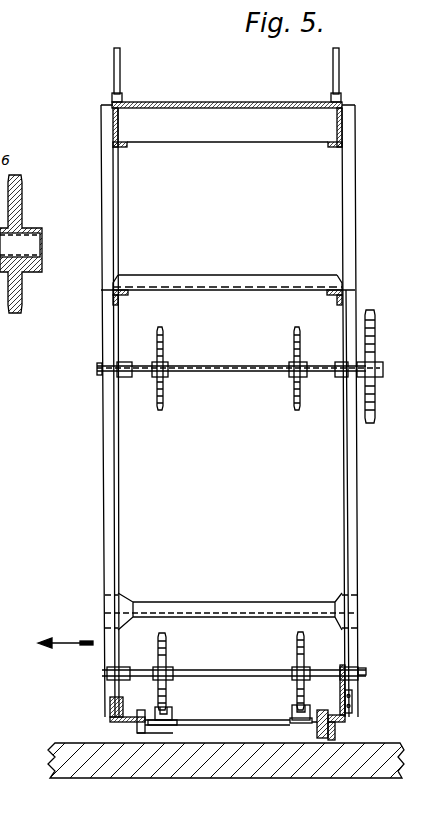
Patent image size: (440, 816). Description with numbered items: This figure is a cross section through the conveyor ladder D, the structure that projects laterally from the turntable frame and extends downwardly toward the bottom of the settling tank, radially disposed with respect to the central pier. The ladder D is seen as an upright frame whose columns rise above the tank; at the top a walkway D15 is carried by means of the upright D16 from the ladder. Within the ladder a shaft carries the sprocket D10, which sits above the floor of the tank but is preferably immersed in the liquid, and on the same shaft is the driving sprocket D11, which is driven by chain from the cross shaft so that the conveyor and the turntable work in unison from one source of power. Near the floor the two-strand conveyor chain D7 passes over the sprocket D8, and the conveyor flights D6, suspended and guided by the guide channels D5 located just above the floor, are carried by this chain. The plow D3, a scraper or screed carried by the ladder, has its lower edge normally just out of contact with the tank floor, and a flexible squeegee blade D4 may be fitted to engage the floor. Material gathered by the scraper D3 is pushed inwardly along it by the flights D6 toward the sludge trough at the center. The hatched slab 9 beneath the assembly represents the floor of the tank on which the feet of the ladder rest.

The conveyor ladder D is at (108, 463).
The plow D3 is at (336, 733).
The flexible squeegee blade D4 is at (335, 737).
The guide channels D5 is at (128, 717).
The conveyor flights D6 is at (207, 720).
The two-strand conveyor chain D7 is at (170, 710).
The sprocket D8 is at (168, 641).
The sprocket D10 is at (295, 338).
The driving sprocket D11 is at (372, 333).
The walkway D15 is at (181, 103).
The upright D16 is at (107, 197).
The floor 9 is at (50, 750).